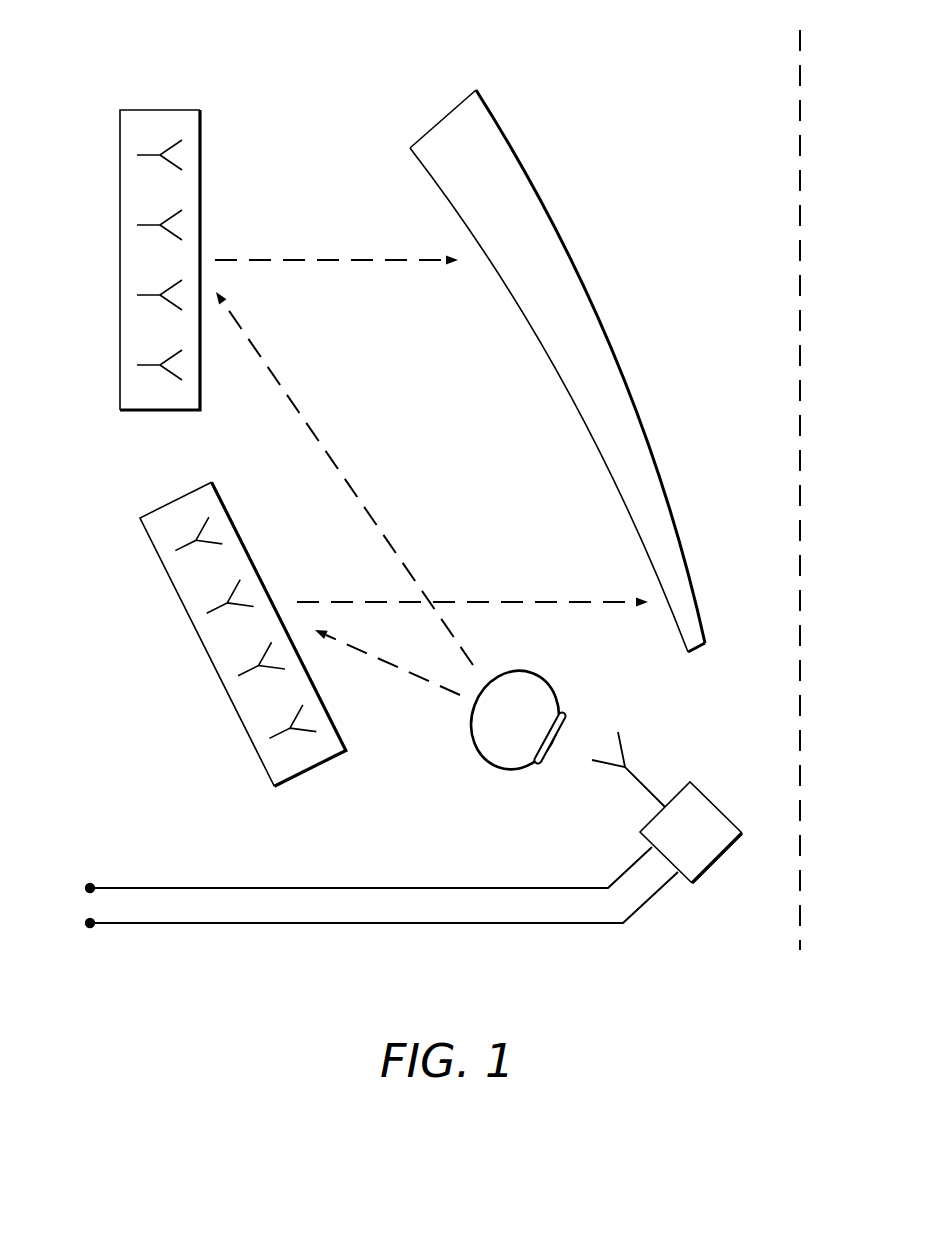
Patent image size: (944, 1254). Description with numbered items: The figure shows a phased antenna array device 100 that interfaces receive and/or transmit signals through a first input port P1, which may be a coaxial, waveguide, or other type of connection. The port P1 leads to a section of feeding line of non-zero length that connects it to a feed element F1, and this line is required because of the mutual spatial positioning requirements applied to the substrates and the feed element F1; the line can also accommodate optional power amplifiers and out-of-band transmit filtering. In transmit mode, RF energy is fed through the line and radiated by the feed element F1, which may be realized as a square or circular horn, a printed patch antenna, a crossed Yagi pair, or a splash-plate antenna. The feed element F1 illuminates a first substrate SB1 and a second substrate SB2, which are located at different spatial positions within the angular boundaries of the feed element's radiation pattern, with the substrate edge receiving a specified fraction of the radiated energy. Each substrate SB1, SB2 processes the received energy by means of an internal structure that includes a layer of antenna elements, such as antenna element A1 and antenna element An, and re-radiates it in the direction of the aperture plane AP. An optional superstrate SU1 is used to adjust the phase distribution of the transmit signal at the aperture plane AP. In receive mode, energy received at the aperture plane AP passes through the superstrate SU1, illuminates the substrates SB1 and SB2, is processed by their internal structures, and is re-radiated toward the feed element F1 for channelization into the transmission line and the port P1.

The substrate SB2 is at (150, 260).
The antenna element An is at (184, 249).
The superstrate SU1 is at (557, 368).
The substrate SB1 is at (235, 634).
The antenna element A1 is at (272, 634).
The feed element F1 is at (629, 762).
The port P1 is at (76, 906).
The phased antenna array device 100 is at (450, 923).
The aperture plane AP is at (820, 490).